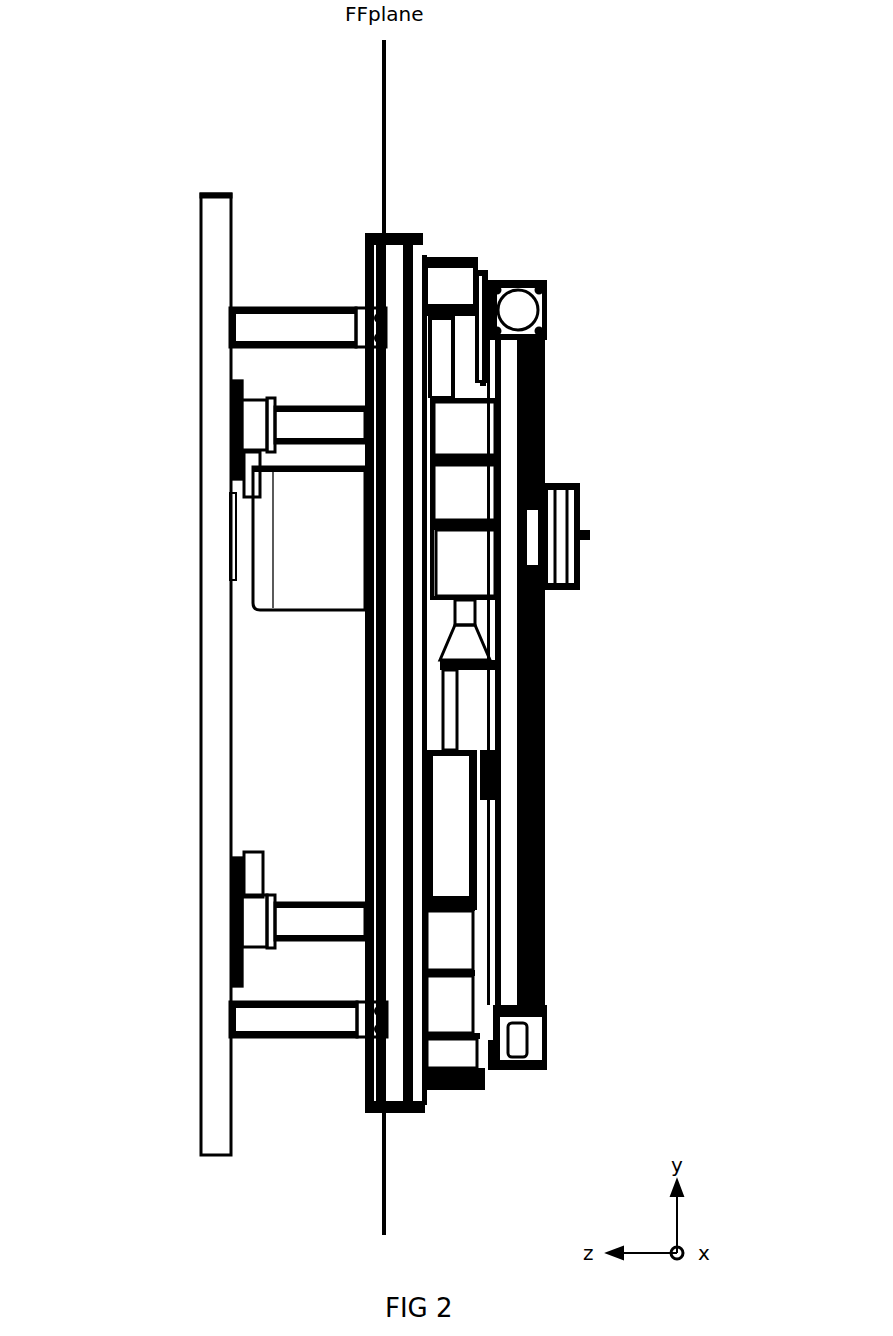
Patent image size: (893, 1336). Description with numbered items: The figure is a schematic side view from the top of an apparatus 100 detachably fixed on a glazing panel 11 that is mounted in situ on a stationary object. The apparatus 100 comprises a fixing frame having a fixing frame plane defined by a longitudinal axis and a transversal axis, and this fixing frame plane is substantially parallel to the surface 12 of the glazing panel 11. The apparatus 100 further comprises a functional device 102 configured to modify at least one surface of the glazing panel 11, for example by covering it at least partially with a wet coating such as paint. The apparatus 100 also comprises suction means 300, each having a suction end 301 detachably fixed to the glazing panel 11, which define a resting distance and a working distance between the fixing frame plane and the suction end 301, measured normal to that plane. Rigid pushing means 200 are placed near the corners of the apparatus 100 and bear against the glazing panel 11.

The apparatus 100 is at (607, 226).
The glazing panel 11 is at (202, 233).
The surface 12 is at (232, 222).
The rigid pushing means 200 is at (267, 327).
The suction means 300 is at (297, 431).
The suction end 301 is at (227, 407).
The functional device 102 is at (290, 554).